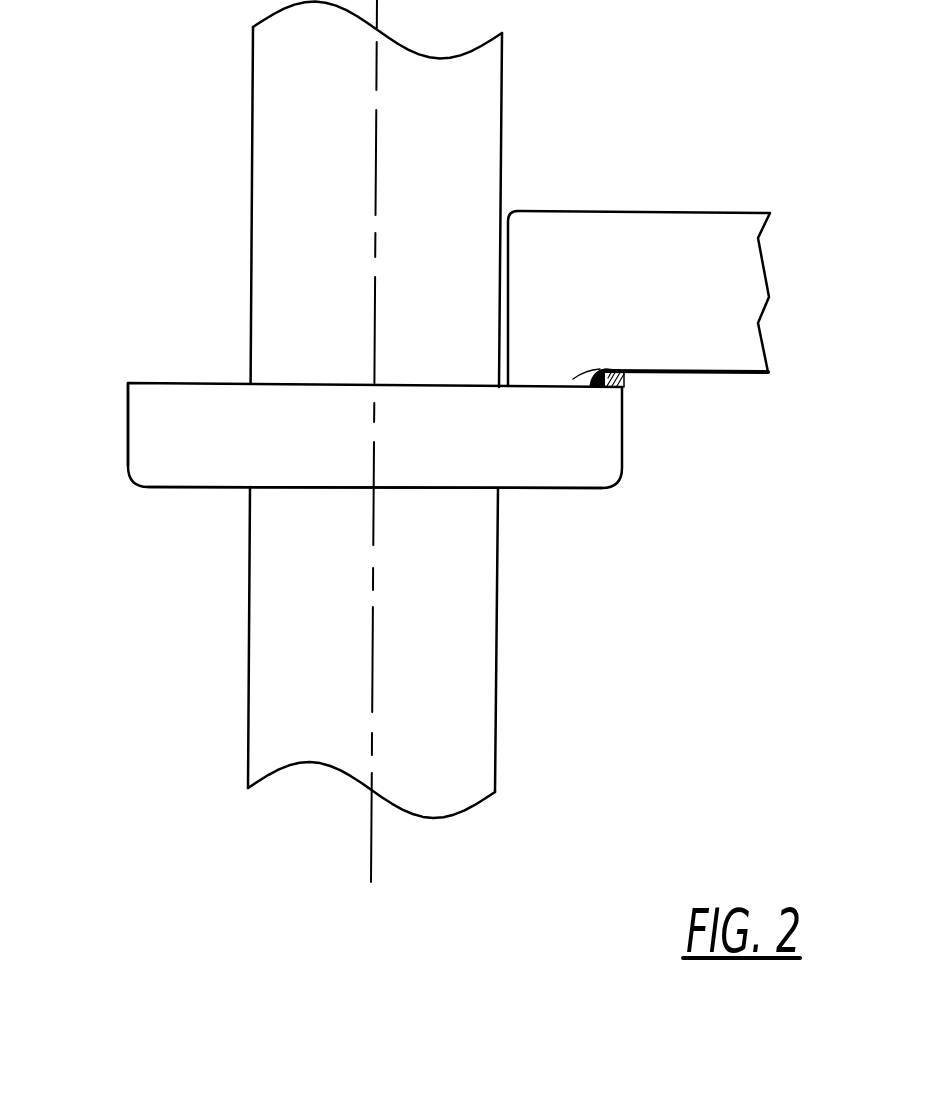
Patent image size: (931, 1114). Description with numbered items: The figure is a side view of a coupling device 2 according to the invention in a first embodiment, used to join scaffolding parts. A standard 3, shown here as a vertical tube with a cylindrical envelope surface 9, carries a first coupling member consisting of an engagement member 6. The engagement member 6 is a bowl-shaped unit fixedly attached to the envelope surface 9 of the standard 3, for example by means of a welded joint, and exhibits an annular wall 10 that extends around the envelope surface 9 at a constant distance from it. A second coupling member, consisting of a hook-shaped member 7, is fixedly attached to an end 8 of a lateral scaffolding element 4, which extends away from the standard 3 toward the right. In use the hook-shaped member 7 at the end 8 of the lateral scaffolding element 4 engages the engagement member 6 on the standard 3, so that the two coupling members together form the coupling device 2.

The coupling device 2 is at (634, 483).
The standard 3 is at (507, 115).
The lateral scaffolding element 4 is at (780, 297).
The engagement member 6 is at (572, 482).
The hook-shaped member 7 is at (630, 380).
The end 8 is at (707, 225).
The envelope surface 9 is at (272, 204).
The annular wall 10 is at (140, 423).